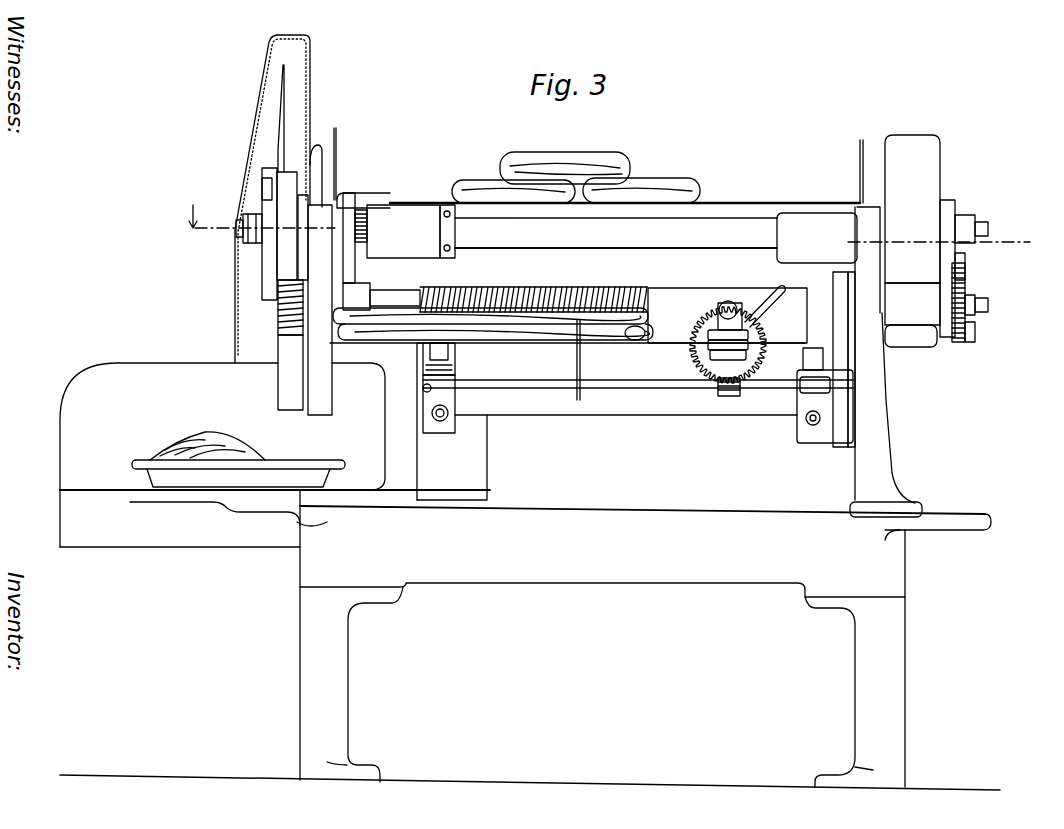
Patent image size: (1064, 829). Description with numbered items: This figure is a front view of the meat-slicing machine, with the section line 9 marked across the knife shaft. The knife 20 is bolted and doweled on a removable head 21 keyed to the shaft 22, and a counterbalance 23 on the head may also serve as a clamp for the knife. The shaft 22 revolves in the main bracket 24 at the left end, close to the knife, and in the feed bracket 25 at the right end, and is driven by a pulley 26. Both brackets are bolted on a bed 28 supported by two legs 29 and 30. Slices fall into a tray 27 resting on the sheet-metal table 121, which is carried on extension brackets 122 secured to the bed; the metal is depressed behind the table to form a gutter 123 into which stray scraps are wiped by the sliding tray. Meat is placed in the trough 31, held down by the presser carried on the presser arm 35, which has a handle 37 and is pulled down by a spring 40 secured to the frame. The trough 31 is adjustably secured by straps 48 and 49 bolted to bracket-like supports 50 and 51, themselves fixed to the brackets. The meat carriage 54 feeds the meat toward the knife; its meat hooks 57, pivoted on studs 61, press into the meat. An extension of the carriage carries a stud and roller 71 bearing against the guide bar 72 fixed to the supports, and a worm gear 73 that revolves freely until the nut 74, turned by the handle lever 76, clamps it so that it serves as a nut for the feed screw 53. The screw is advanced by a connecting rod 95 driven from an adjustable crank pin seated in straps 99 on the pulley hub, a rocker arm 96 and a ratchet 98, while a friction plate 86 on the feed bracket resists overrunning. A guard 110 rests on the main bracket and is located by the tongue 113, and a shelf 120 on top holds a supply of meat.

The section line 9 is at (606, 229).
The knife 20 is at (278, 112).
The removable head 21 is at (290, 180).
The shaft 22 is at (738, 232).
The counterbalance 23 is at (265, 287).
The main bracket 24 is at (400, 476).
The feed bracket 25 is at (880, 462).
The pulley 26 is at (925, 135).
The tray 27 is at (130, 462).
The bed 28 is at (620, 577).
The leg 29 is at (305, 685).
The leg 30 is at (895, 690).
The trough 31 is at (298, 415).
The presser arm 35 is at (357, 281).
The handle 37 is at (377, 192).
The spring 40 is at (370, 228).
The strap 48 is at (418, 354).
The strap 49 is at (805, 360).
The bracket-like support 50 is at (452, 437).
The bracket-like support 51 is at (828, 443).
The feed screw 53 is at (553, 283).
The meat carriage 54 is at (684, 290).
The meat hooks 57 is at (592, 322).
The studs 61 is at (635, 340).
The stud and roller 71 is at (732, 396).
The guide bar 72 is at (578, 392).
The worm gear 73 is at (700, 330).
The nut 74 is at (724, 302).
The handle lever 76 is at (775, 290).
The friction plate 86 is at (836, 290).
The connecting rod 95 is at (968, 258).
The rocker arm 96 is at (917, 318).
The ratchet 98 is at (960, 342).
The straps 99 is at (950, 205).
The shield or guard 110 is at (268, 48).
The tongue 113 is at (318, 147).
The shelf 120 is at (708, 203).
The table 121 is at (60, 490).
The extension brackets 122 is at (206, 503).
The gutter 123 is at (108, 548).